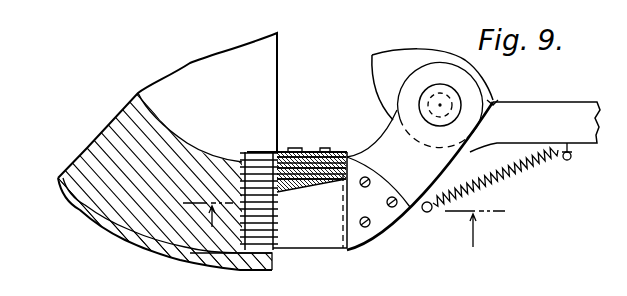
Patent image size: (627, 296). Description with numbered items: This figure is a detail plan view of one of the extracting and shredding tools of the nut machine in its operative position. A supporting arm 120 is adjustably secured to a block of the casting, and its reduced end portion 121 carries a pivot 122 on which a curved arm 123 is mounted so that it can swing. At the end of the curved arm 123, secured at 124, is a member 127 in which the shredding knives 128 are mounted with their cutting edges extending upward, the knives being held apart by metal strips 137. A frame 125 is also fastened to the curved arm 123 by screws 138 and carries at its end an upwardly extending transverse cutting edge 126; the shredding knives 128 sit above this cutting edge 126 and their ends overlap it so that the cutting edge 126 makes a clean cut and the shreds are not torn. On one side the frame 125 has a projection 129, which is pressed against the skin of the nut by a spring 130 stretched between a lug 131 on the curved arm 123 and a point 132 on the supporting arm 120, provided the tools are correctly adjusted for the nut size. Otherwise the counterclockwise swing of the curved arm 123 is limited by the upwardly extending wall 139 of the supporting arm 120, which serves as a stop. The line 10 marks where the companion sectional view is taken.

The section line 10 is at (344, 225).
The supporting arm 120 is at (553, 110).
The reduced end portion 121 is at (390, 58).
The pivot 122 is at (440, 98).
The curved arm 123 is at (369, 150).
The securing point 124 is at (366, 187).
The frame 125 is at (302, 248).
The cutting edge 126 is at (242, 160).
The member 127 is at (327, 235).
The shredding knives 128 is at (286, 160).
The projection 129 is at (274, 253).
The spring 130 is at (505, 183).
The lug 131 is at (427, 212).
The point 132 is at (572, 150).
The metal strips 137 is at (313, 163).
The screws 138 is at (327, 150).
The upwardly extending wall 139 is at (495, 103).